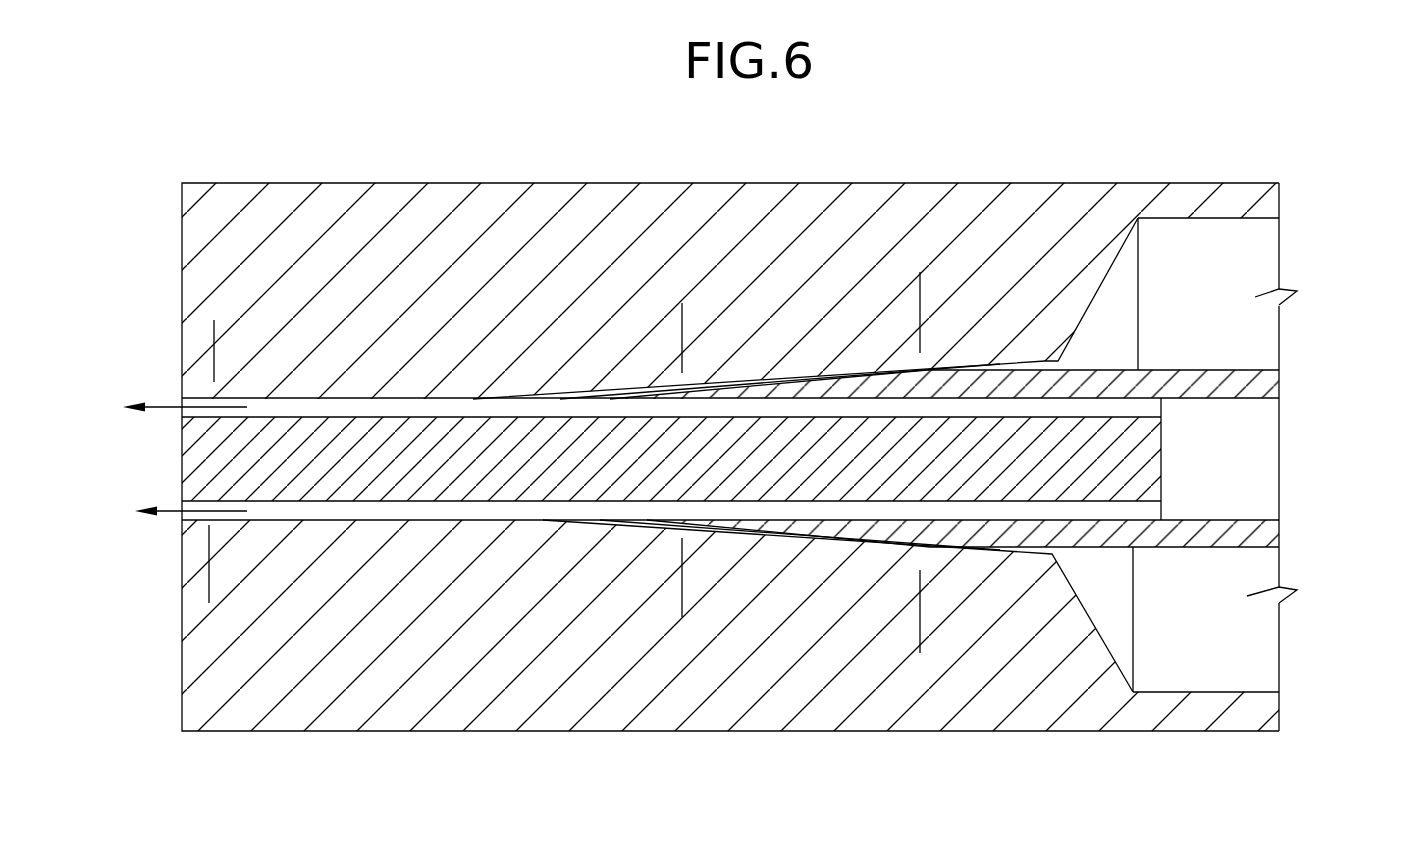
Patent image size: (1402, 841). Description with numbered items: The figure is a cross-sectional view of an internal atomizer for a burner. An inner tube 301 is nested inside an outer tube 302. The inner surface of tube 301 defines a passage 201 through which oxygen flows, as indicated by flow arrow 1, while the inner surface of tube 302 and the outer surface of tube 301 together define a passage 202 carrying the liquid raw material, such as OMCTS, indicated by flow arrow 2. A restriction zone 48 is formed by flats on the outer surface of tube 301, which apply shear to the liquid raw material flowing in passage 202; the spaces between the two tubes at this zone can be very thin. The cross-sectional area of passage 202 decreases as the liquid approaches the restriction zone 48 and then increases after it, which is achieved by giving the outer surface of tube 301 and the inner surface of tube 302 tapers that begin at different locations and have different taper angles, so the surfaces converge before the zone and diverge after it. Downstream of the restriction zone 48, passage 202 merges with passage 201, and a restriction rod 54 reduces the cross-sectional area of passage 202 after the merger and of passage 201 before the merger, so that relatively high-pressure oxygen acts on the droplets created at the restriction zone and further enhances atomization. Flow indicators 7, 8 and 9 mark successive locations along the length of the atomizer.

The flow arrow 1 is at (1210, 453).
The flow arrow 2 is at (1090, 355).
The first flow region 7 is at (245, 571).
The second flow region 8 is at (730, 600).
The third flow region 9 is at (962, 627).
The restriction zone 48 is at (952, 358).
The restriction rod 54 is at (202, 452).
The passage 201 is at (808, 510).
The passage 202 is at (342, 510).
The tube 301 is at (1260, 535).
The tube 302 is at (1213, 713).